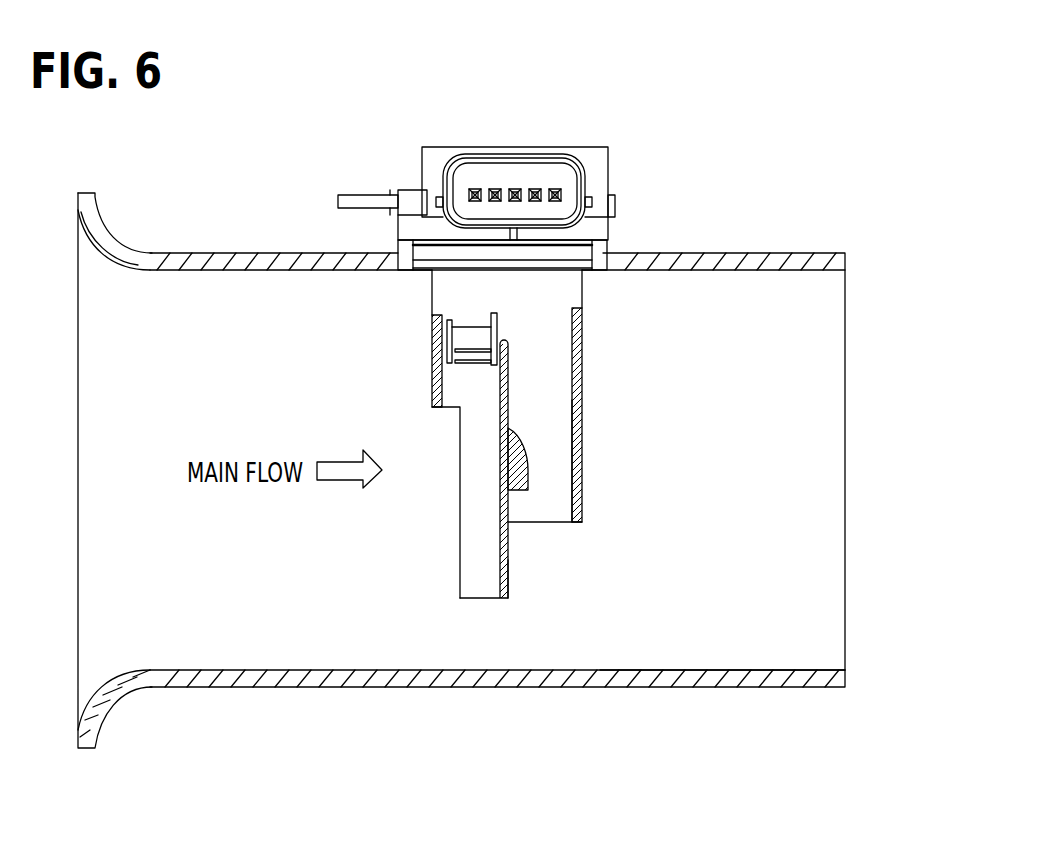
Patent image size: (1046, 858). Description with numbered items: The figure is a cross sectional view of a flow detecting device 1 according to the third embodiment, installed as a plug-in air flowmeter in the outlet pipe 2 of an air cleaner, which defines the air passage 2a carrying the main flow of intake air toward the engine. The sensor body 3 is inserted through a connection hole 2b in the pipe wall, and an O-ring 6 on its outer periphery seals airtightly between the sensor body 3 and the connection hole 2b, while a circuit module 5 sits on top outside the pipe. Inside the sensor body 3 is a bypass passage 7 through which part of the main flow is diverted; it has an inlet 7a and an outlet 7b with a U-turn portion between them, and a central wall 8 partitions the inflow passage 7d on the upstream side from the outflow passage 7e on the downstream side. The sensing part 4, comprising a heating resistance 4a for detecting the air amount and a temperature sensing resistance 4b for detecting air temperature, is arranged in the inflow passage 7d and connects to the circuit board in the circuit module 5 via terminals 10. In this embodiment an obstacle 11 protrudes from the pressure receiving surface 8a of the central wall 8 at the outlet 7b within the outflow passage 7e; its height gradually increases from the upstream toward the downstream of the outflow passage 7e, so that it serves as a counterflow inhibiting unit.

The flow detecting device 1 is at (599, 133).
The outlet pipe 2 is at (788, 260).
The air passage 2a is at (808, 345).
The connection hole 2b is at (604, 215).
The sensor body 3 is at (432, 315).
The sensing part 4 is at (412, 351).
The heating resistance 4a is at (455, 350).
The temperature sensing resistance 4b is at (470, 365).
The circuit module 5 is at (437, 160).
The O-ring 6 is at (618, 252).
The bypass passage 7 is at (543, 453).
The inlet 7a is at (450, 407).
The outlet 7b is at (543, 522).
The inflow passage 7d is at (573, 380).
The outflow passage 7e is at (552, 412).
The central wall 8 is at (534, 469).
The pressure receiving surface 8a is at (513, 574).
The terminals 10 is at (475, 350).
The obstacle 11 is at (529, 462).